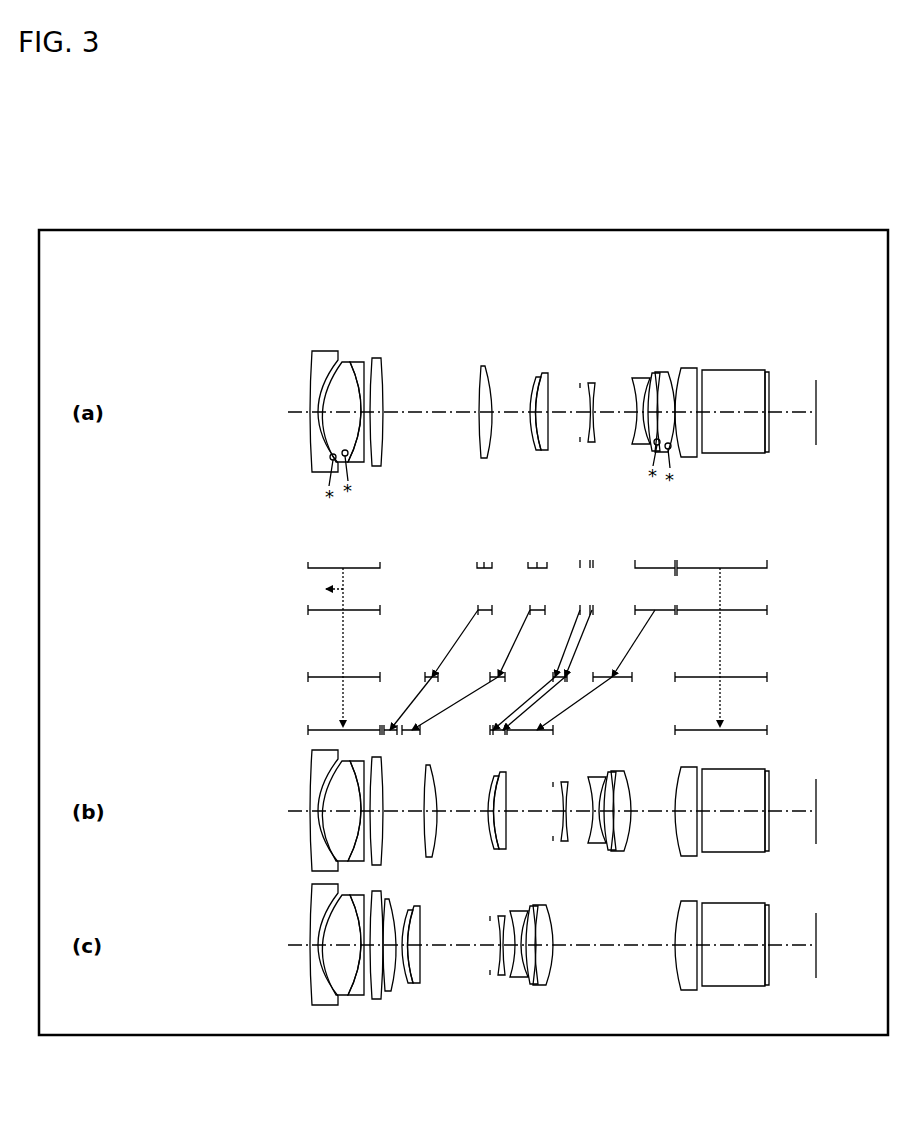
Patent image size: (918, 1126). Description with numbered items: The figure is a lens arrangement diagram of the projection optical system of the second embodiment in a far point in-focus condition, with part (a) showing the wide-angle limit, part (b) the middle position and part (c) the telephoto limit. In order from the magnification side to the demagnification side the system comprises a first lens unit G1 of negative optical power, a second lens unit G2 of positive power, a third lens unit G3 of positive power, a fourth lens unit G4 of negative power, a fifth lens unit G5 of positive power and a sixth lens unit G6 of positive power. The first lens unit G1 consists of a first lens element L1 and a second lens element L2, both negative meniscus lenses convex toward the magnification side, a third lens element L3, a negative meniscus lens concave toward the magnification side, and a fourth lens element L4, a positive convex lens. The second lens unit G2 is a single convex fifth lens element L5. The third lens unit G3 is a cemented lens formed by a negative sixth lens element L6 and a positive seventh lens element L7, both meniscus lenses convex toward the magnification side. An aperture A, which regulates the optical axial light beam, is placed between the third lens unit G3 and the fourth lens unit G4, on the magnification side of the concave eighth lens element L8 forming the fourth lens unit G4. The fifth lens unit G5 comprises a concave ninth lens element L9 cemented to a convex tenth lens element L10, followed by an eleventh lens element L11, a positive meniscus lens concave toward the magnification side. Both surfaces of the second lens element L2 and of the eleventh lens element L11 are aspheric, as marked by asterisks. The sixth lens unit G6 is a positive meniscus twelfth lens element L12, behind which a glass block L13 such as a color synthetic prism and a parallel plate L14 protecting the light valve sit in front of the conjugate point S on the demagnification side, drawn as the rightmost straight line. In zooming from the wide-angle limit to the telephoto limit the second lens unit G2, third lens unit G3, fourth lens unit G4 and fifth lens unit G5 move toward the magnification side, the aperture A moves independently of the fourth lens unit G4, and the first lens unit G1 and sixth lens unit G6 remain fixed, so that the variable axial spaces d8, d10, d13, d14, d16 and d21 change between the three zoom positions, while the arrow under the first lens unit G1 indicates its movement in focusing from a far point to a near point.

The first lens element L1 is at (326, 358).
The second lens element L2 is at (341, 362).
The third lens element L3 is at (359, 366).
The fourth lens element L4 is at (376, 358).
The fifth lens element L5 is at (483, 366).
The sixth lens element L6 is at (536, 377).
The seventh lens element L7 is at (543, 373).
The eighth lens element L8 is at (592, 383).
The ninth lens element L9 is at (641, 378).
The tenth lens element L10 is at (648, 375).
The eleventh lens element L11 is at (661, 372).
The twelfth lens element L12 is at (690, 369).
The glass block L13 is at (732, 380).
The parallel plate L14 is at (768, 374).
The aperture A is at (580, 384).
The conjugate point on the demagnification side S is at (816, 397).
The variable air space d8 is at (429, 413).
The variable air space d10 is at (510, 413).
The variable air space d13 is at (563, 413).
The variable air space d14 is at (588, 413).
The variable air space d16 is at (613, 413).
The variable air space d21 is at (675, 413).
The first lens unit G1 is at (344, 638).
The second lens unit G2 is at (446, 638).
The third lens unit G3 is at (482, 638).
The fourth lens unit G4 is at (620, 544).
The fifth lens unit G5 is at (655, 566).
The sixth lens unit G6 is at (720, 567).